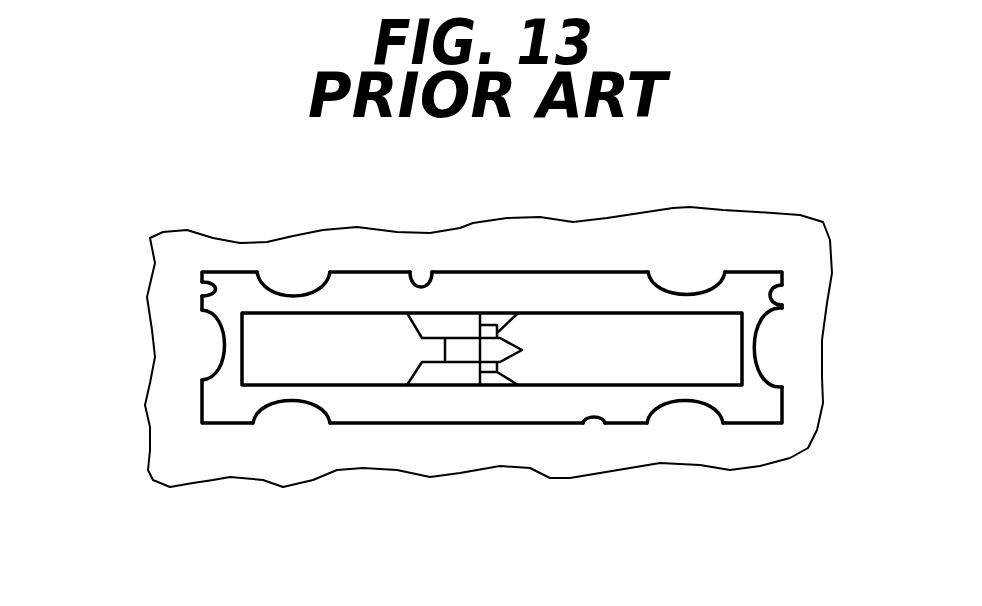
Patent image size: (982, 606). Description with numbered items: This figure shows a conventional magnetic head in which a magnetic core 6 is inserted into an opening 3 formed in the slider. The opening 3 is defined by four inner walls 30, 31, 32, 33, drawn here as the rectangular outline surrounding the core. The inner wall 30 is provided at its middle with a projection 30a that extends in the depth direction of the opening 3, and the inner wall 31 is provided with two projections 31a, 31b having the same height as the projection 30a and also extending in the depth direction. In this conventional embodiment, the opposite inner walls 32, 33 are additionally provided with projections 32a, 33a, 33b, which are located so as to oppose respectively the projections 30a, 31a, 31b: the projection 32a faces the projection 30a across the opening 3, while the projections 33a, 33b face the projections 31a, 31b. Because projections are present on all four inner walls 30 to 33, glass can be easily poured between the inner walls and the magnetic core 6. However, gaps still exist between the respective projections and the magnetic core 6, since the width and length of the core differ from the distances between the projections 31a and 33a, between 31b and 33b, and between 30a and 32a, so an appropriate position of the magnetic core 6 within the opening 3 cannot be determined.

The opening 3 is at (562, 293).
The magnetic core 6 is at (367, 377).
The inner wall 30 is at (203, 284).
The projection 30a is at (213, 345).
The inner wall 31 is at (433, 276).
The projection 31a is at (297, 293).
The projection 31b is at (690, 290).
The inner wall 32 is at (783, 305).
The projection 32a is at (763, 355).
The inner wall 33 is at (592, 420).
The projection 33a is at (293, 412).
The projection 33b is at (698, 413).